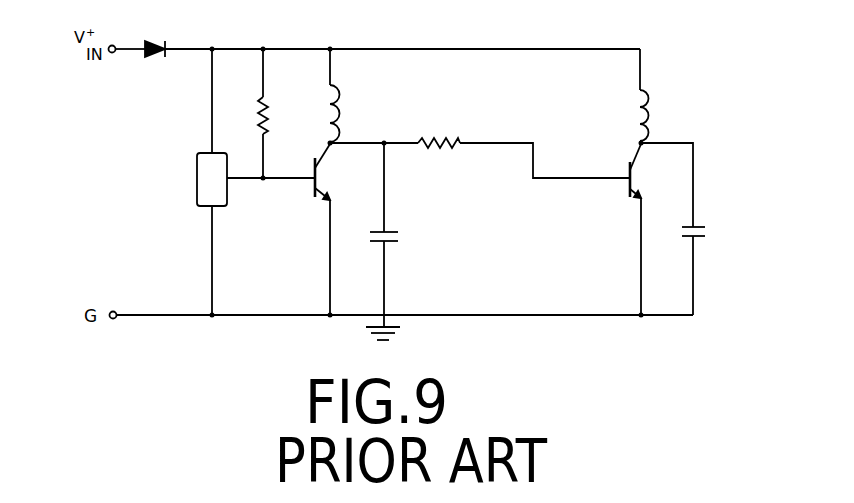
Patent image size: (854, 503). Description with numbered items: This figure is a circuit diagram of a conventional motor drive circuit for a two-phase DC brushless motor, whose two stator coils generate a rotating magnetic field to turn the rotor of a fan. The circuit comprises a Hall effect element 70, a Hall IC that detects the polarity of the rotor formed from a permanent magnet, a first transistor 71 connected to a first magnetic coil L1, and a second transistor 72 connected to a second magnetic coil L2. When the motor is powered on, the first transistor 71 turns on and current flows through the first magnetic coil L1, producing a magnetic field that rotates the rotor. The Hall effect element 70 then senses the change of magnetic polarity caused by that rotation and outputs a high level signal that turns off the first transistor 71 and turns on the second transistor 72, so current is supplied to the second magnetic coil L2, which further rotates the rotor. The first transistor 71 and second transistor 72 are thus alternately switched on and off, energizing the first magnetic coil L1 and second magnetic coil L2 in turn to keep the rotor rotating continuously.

The Hall effect element 70 is at (197, 192).
The first transistor 71 is at (332, 178).
The second transistor 72 is at (646, 177).
The first magnetic coil L1 is at (342, 122).
The second magnetic coil L2 is at (653, 120).